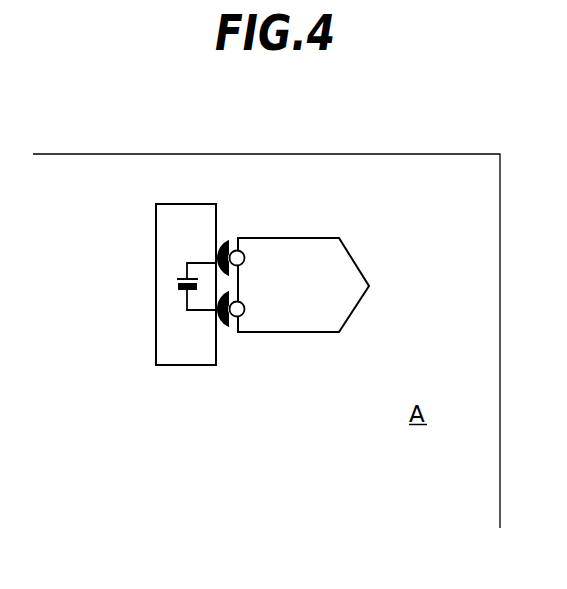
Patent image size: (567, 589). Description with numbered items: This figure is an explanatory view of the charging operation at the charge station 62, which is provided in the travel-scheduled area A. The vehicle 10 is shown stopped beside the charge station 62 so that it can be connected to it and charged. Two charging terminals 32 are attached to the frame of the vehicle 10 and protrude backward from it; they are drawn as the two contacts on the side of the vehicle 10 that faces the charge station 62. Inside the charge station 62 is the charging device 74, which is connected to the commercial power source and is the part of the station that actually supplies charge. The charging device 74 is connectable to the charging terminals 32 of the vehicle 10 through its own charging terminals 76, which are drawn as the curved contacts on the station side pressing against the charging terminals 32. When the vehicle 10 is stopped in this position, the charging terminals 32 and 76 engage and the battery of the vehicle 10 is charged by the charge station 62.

The vehicle 10 is at (355, 252).
The charging terminals 32 is at (245, 259).
The charge station 62 is at (175, 203).
The charging device 74 is at (181, 275).
The charging terminals 76 is at (227, 240).